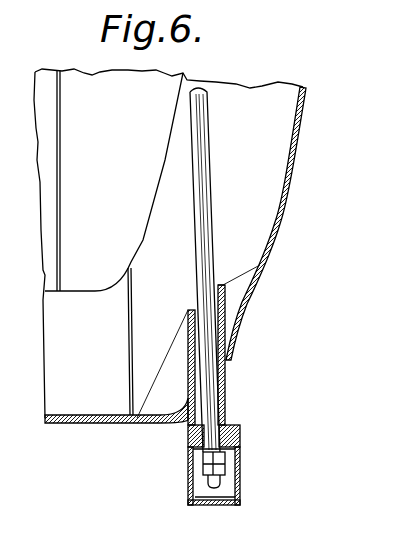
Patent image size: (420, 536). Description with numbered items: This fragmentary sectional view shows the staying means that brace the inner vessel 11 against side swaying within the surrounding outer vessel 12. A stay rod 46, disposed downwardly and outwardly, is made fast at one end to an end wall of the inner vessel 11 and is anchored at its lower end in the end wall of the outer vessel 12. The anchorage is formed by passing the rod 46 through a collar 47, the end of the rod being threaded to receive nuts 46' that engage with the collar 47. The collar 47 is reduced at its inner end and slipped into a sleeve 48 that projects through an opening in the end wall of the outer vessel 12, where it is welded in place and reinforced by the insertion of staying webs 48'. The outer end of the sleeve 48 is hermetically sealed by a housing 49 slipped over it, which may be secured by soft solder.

The inner vessel 11 is at (147, 227).
The outer vessel 12 is at (293, 173).
The stay rod 46 is at (218, 270).
The nuts 46' is at (178, 473).
The collar 47 is at (238, 448).
The sleeve 48 is at (232, 355).
The staying webs 48' is at (263, 285).
The housing 49 is at (242, 482).